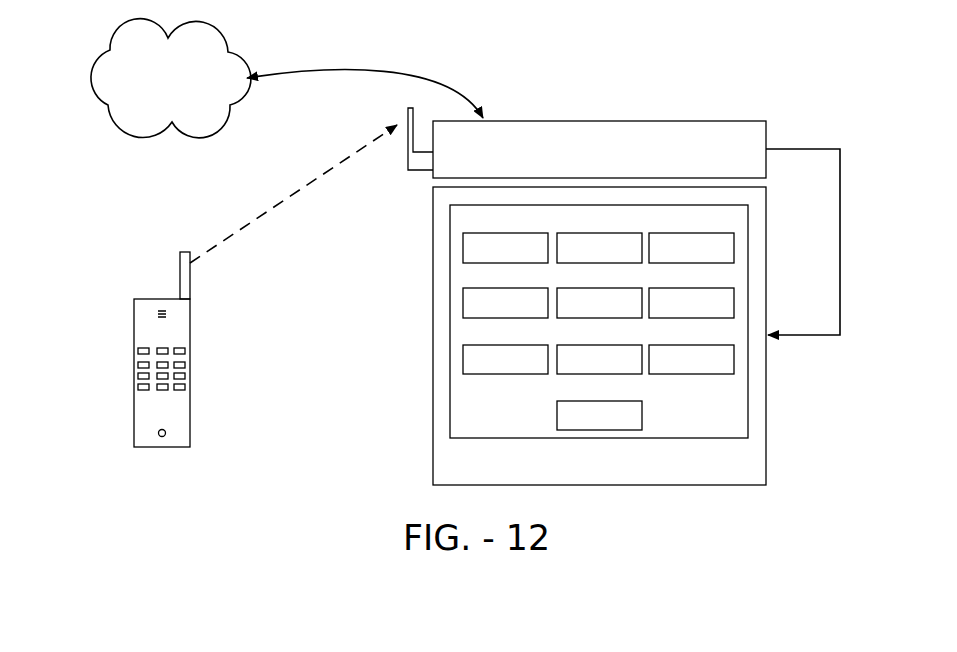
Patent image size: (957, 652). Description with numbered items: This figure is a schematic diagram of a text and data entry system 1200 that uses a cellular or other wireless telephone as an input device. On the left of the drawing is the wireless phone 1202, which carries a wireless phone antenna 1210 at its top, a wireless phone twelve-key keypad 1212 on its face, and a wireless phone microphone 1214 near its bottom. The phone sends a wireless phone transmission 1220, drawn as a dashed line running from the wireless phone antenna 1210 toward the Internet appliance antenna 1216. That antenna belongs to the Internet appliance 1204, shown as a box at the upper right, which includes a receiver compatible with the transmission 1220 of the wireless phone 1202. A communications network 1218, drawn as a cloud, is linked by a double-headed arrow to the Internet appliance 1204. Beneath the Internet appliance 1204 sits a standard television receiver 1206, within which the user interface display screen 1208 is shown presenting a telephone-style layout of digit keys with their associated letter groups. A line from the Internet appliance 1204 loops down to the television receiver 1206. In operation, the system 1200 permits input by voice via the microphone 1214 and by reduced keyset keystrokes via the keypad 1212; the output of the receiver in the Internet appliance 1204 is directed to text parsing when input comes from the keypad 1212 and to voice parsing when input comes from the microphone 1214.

The text and data entry system 1200 is at (322, 488).
The wireless phone 1202 is at (190, 413).
The Internet appliance 1204 is at (678, 121).
The standard television receiver 1206 is at (767, 400).
The user interface display screen 1208 is at (717, 439).
The wireless phone antenna 1210 is at (180, 271).
The wireless phone 12-key keypad 1212 is at (108, 383).
The wireless phone microphone 1214 is at (161, 437).
The Internet appliance antenna 1216 is at (408, 149).
The communications network 1218 is at (214, 35).
The wireless phone transmission 1220 is at (318, 181).